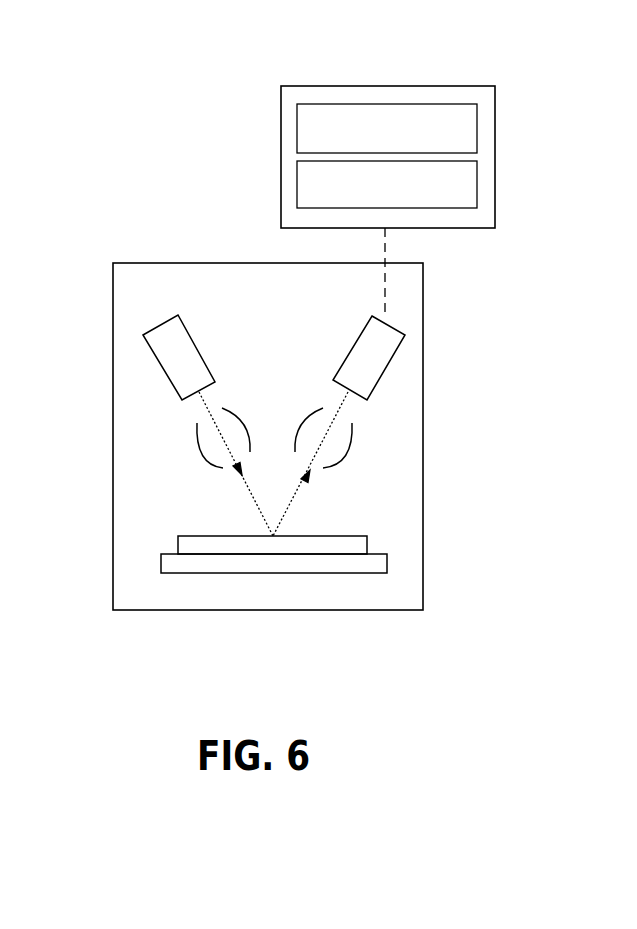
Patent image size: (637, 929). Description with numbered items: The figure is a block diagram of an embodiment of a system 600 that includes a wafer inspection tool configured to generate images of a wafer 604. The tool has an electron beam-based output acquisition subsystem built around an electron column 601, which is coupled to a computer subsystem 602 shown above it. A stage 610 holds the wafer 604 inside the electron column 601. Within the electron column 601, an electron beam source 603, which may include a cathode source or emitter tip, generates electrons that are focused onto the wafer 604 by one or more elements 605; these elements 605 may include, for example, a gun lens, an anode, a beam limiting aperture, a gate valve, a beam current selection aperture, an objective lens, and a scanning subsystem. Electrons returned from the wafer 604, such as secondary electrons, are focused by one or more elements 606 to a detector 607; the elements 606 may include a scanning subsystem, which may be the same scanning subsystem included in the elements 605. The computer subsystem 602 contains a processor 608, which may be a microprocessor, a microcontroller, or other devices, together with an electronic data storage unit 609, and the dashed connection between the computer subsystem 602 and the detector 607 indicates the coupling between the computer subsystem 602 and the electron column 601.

The system 600 is at (172, 155).
The electron column 601 is at (249, 263).
The computer subsystem 602 is at (387, 86).
The electron beam source 603 is at (182, 328).
The wafer 604 is at (320, 536).
The one or more elements 605 is at (208, 457).
The one or more elements 606 is at (347, 457).
The detector 607 is at (362, 333).
The processor 608 is at (404, 141).
The electronic data storage unit 609 is at (404, 197).
The stage 610 is at (273, 573).